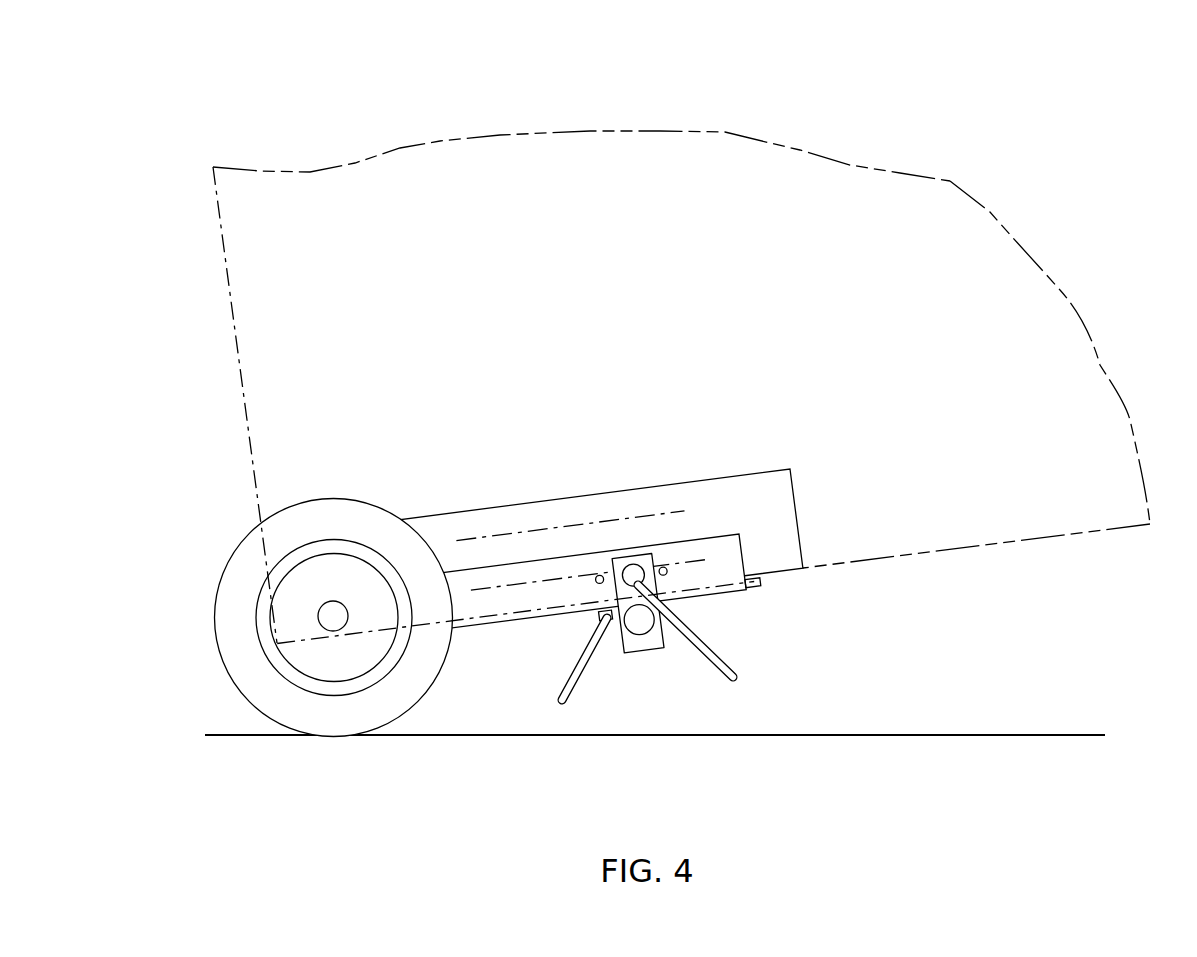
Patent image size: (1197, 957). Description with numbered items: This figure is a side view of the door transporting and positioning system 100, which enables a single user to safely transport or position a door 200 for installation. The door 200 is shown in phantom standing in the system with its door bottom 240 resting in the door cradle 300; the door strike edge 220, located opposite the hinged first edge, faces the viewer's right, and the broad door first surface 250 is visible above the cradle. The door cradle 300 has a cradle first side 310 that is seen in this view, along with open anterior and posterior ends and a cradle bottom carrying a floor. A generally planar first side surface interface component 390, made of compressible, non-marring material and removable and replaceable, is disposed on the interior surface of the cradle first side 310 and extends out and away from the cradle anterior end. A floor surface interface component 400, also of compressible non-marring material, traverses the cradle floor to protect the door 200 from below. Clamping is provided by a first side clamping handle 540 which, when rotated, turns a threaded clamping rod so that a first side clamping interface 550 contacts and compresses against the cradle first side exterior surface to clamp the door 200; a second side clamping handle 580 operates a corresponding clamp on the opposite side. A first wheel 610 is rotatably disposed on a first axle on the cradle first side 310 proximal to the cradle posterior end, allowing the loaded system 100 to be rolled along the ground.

The door transporting and positioning system 100 is at (300, 148).
The door 200 is at (965, 178).
The door strike edge 220 is at (1068, 535).
The door bottom 240 is at (237, 353).
The door first surface 250 is at (980, 318).
The door cradle 300 is at (622, 540).
The cradle first side 310 is at (502, 590).
The first side surface interface component 390 is at (738, 500).
The floor surface interface component 400 is at (760, 584).
The first side clamping handle 540 is at (717, 650).
The first side clamping interface 550 is at (638, 647).
The second side clamping handle 580 is at (580, 672).
The first wheel 610 is at (289, 697).